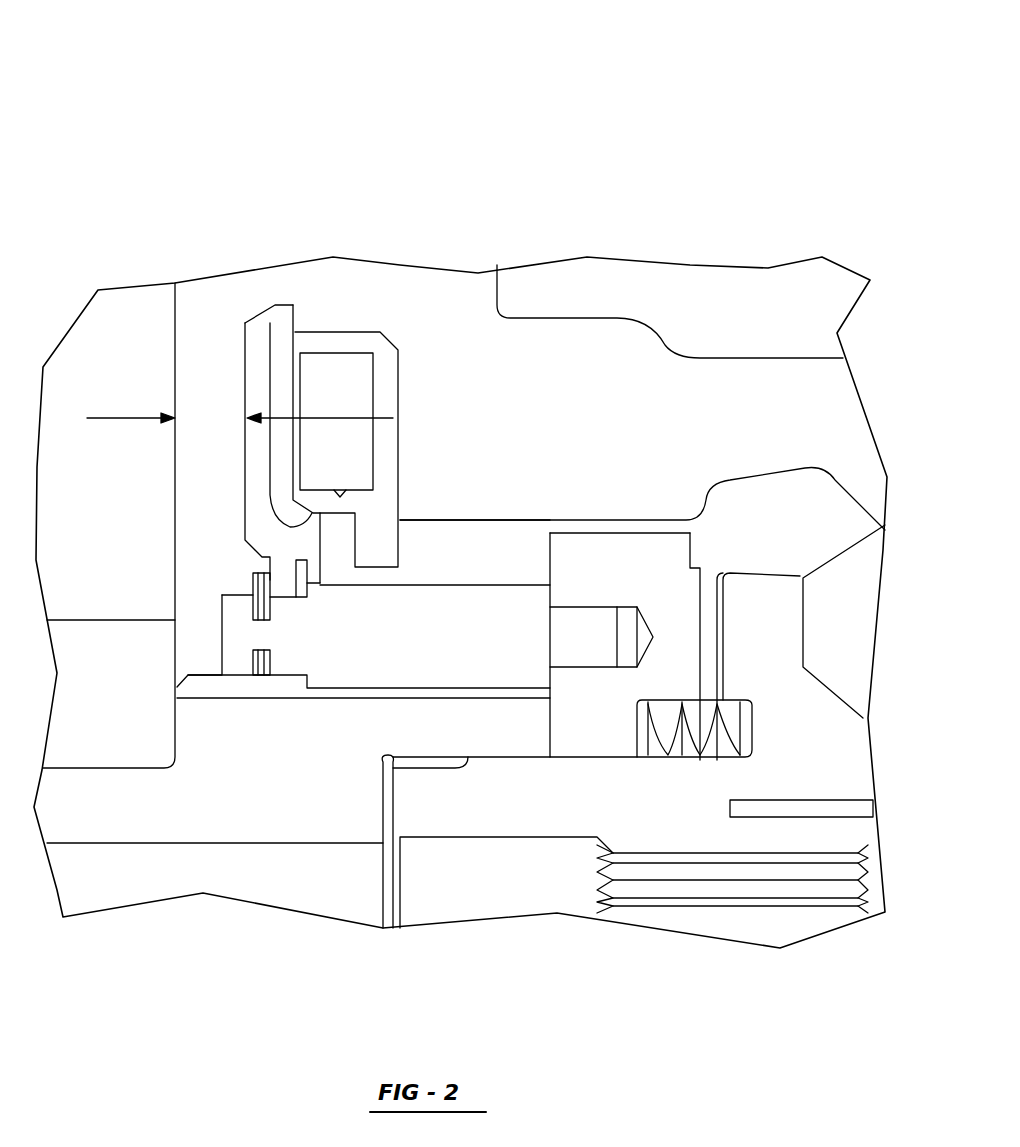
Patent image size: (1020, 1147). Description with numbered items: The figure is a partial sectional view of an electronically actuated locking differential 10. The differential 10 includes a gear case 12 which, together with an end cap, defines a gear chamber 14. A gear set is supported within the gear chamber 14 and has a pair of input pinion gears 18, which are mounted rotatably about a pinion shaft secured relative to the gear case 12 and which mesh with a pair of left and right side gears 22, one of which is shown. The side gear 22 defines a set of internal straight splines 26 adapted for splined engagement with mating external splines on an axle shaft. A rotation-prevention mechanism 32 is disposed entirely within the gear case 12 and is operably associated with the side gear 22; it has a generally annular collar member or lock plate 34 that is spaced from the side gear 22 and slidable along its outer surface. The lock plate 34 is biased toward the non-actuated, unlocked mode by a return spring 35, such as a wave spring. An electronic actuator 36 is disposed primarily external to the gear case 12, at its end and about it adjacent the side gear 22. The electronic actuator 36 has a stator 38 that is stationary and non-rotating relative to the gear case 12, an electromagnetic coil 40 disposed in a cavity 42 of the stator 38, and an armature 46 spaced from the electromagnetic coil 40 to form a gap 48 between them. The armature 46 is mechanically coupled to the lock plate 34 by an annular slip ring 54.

The electronically actuated locking differential 10 is at (777, 72).
The gear case 12 is at (783, 375).
The gear chamber 14 is at (846, 485).
The input pinion gears 18 is at (866, 614).
The side gear 22 is at (805, 713).
The internal straight splines 26 is at (653, 890).
The rotation-prevention mechanism 32 is at (703, 533).
The lock plate 34 is at (648, 560).
The return spring 35 is at (705, 715).
The electronic actuator 36 is at (406, 352).
The stator 38 is at (385, 525).
The electromagnetic coil 40 is at (357, 390).
The cavity 42 is at (331, 352).
The armature 46 is at (272, 312).
The gap 48 is at (282, 483).
The annular slip ring 54 is at (370, 637).